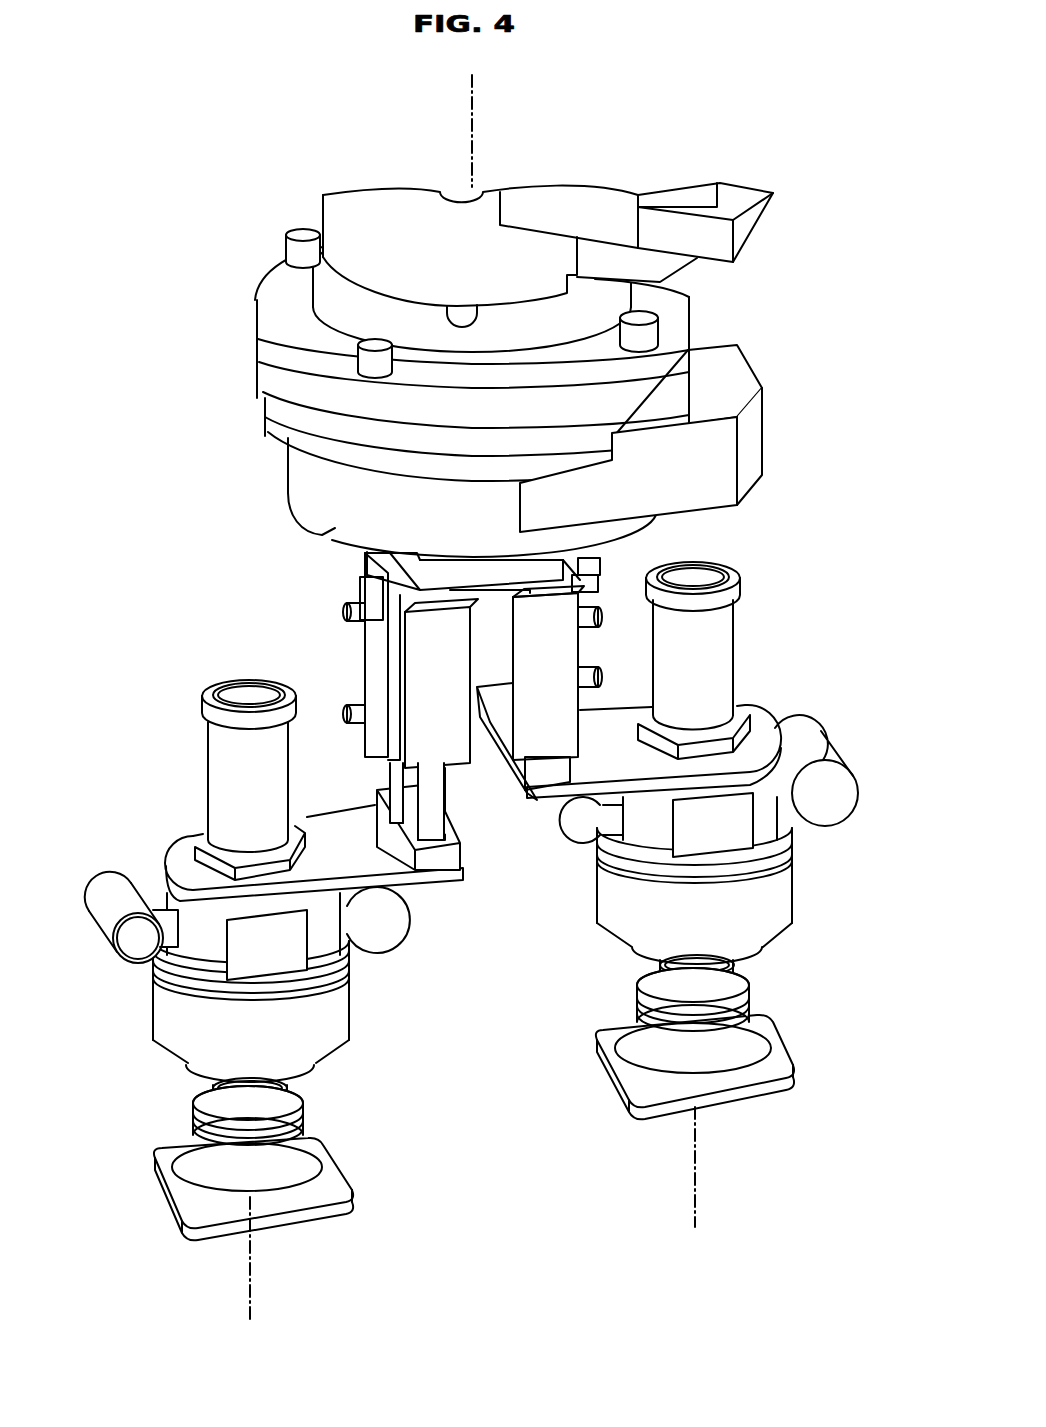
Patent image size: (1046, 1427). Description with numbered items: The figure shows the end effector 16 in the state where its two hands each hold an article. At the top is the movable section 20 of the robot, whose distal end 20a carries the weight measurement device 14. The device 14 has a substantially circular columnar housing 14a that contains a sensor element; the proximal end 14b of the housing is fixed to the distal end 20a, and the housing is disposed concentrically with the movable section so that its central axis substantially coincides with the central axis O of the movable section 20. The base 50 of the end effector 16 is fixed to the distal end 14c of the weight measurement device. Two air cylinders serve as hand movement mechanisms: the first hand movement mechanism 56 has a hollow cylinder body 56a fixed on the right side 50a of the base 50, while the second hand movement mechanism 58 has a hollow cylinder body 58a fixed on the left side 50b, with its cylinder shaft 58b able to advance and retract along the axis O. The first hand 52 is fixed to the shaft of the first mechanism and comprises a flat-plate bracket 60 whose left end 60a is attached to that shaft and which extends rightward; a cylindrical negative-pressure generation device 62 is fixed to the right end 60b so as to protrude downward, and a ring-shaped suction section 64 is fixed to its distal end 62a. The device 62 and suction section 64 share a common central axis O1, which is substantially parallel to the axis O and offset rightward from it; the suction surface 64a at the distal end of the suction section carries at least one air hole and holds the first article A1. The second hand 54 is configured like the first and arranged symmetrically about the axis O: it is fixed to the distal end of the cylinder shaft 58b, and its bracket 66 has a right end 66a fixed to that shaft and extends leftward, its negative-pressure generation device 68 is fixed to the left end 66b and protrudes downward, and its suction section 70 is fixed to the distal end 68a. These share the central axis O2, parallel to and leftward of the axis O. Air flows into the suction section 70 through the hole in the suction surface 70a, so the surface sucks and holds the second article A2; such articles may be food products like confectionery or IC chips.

The weight measurement device 14 is at (235, 295).
The housing 14a is at (256, 381).
The proximal end 14b is at (394, 292).
The distal end 14c is at (289, 525).
The movable section 20 is at (423, 220).
The distal end 20a is at (477, 304).
The central axis O is at (475, 123).
The end effector 16 is at (200, 667).
The base 50 is at (507, 629).
The right side 50a is at (580, 556).
The left side 50b is at (395, 562).
The first hand 52 is at (808, 896).
The second hand 54 is at (125, 988).
The first hand movement mechanism 56 is at (600, 645).
The cylinder body 56a is at (570, 691).
The second hand movement mechanism 58 is at (357, 662).
The cylinder body 58a is at (462, 697).
The cylinder shaft 58b is at (393, 765).
The bracket 60 is at (612, 717).
The left end 60a is at (537, 775).
The right end 60b is at (762, 725).
The negative-pressure generation device 62 is at (597, 910).
The distal end 62a is at (755, 955).
The suction section 64 is at (637, 1000).
The suction surface 64a is at (660, 1083).
The bracket 66 is at (360, 857).
The right end 66a is at (438, 862).
The left end 66b is at (183, 847).
The negative-pressure generation device 68 is at (350, 1010).
The distal end 68a is at (315, 1075).
The suction section 70 is at (193, 1117).
The suction surface 70a is at (232, 1195).
The first article A1 is at (792, 1085).
The second article A2 is at (352, 1203).
The central axis O1 is at (697, 1172).
The central axis O2 is at (252, 1262).